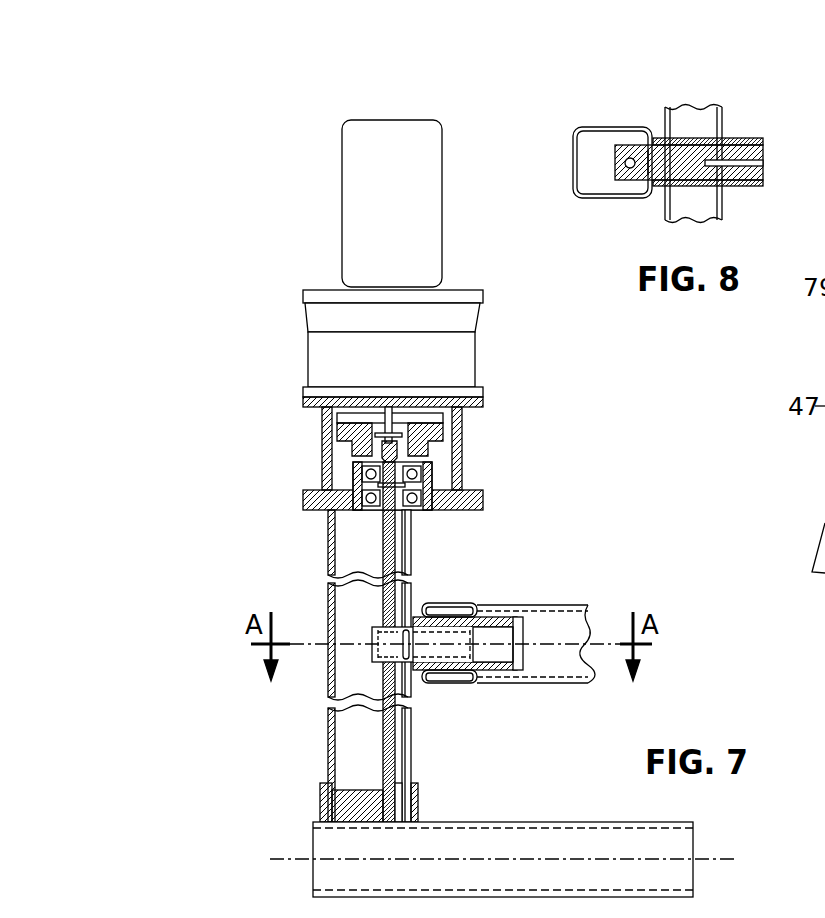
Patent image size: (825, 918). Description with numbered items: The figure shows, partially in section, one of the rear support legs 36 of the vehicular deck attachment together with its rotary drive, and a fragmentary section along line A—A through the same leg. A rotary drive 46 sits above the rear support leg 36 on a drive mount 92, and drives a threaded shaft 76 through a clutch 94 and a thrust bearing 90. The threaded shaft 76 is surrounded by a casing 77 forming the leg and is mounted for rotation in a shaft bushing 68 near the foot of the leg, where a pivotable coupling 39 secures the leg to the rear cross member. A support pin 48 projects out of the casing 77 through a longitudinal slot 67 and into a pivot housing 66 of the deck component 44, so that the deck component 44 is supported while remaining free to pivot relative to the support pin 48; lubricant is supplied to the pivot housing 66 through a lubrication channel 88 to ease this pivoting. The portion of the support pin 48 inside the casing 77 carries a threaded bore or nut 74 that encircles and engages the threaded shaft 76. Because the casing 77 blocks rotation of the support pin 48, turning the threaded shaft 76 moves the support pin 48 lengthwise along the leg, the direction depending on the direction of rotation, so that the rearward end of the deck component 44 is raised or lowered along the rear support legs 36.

In FIG. 7, the rear support leg 36 is at (322, 462).
In FIG. 7, the pivotable coupling 39 is at (320, 808).
In FIG. 7, the deck component 44 is at (445, 605).
In FIG. 7, the rotary drive 46 is at (432, 152).
In FIG. 7, the support pin 48 is at (445, 657).
In FIG. 8, the support pin 48 is at (730, 178).
In FIG. 7, the pivot housing 66 is at (503, 672).
In FIG. 8, the pivot housing 66 is at (742, 140).
In FIG. 8, the longitudinal slot 67 is at (645, 168).
In FIG. 7, the shaft bushing 68 is at (400, 800).
In FIG. 8, the threaded bore or nut 74 is at (630, 158).
In FIG. 7, the threaded shaft 76 is at (395, 537).
In FIG. 7, the casing 77 is at (330, 592).
In FIG. 8, the casing 77 is at (597, 127).
In FIG. 7, the lubrication channel 88 is at (495, 642).
In FIG. 8, the lubrication channel 88 is at (693, 164).
In FIG. 7, the thrust bearing 90 is at (430, 471).
In FIG. 7, the drive mount 92 is at (432, 415).
In FIG. 7, the clutch 94 is at (440, 433).